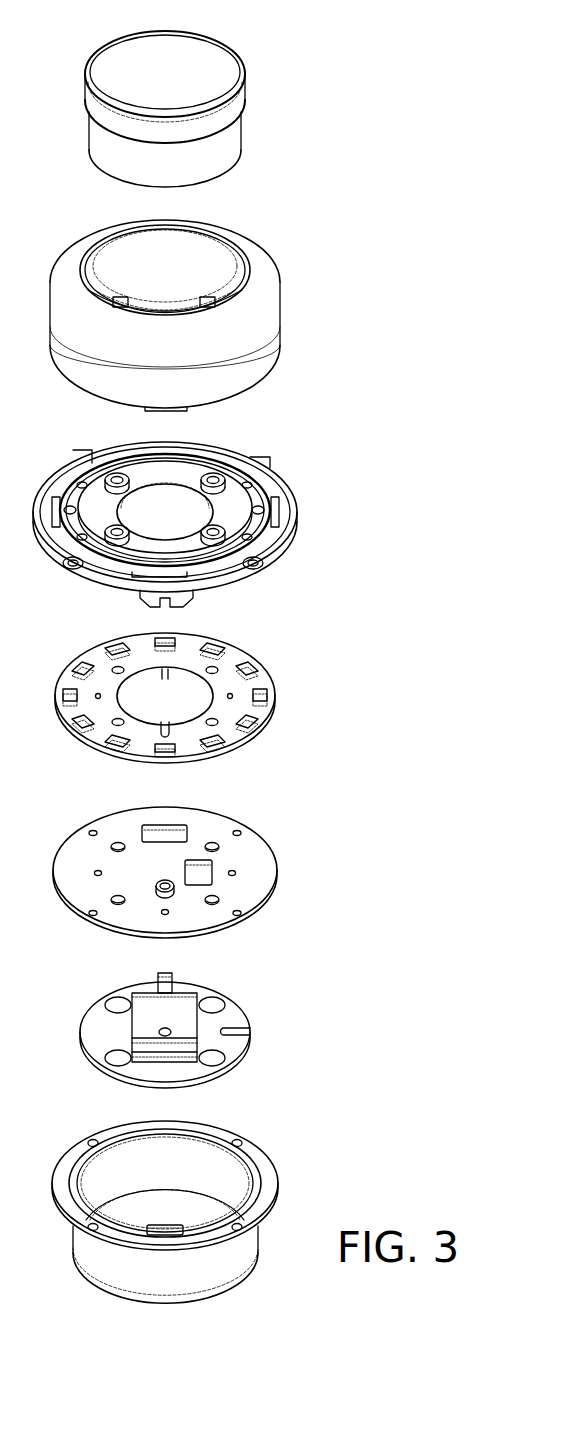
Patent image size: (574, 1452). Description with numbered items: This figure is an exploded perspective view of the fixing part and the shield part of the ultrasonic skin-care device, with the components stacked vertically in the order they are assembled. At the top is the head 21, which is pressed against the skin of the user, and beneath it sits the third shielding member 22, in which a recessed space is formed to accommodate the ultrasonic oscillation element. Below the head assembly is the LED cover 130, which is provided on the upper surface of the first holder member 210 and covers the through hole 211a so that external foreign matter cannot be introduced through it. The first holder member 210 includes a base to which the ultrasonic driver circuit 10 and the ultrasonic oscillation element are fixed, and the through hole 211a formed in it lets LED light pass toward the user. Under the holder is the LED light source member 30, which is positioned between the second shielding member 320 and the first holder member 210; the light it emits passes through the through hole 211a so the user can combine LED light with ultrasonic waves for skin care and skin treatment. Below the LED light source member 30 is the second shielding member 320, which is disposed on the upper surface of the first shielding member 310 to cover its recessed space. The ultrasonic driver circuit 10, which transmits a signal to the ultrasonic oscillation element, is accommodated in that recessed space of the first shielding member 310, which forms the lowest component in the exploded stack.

The head 21 is at (212, 73).
The third shielding member 22 is at (230, 138).
The LED cover 130 is at (292, 270).
The first holder member 210 is at (312, 483).
The through hole 211a is at (262, 505).
The LED light source member 30 is at (290, 660).
The second shielding member 320 is at (288, 835).
The ultrasonic driver circuit 10 is at (268, 1004).
The first shielding member 310 is at (293, 1155).